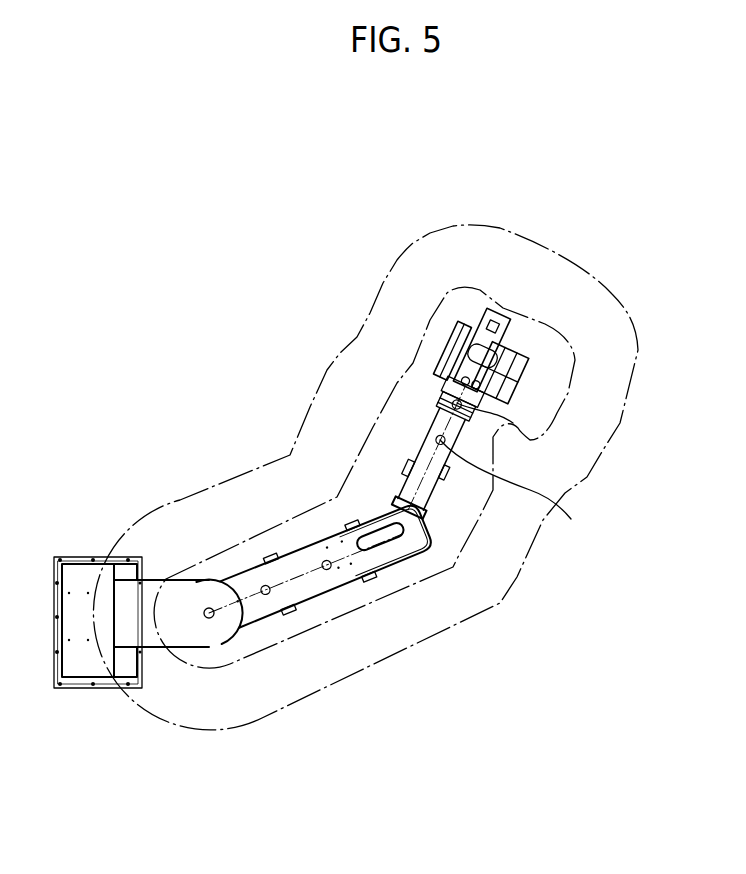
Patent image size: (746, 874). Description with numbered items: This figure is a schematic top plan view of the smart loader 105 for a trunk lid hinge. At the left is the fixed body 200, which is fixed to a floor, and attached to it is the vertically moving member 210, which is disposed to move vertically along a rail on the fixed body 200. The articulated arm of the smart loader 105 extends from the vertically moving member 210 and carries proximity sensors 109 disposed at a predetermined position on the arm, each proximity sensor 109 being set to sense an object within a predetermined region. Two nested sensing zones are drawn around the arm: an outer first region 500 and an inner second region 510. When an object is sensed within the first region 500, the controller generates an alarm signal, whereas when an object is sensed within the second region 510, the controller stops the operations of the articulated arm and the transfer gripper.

The smart loader 105 is at (327, 473).
The proximity sensor 109 is at (500, 427).
The fixed body 200 is at (73, 687).
The vertically moving member 210 is at (143, 594).
The first region 500 is at (357, 647).
The second region 510 is at (230, 662).